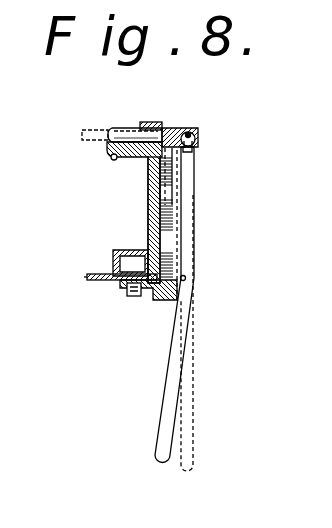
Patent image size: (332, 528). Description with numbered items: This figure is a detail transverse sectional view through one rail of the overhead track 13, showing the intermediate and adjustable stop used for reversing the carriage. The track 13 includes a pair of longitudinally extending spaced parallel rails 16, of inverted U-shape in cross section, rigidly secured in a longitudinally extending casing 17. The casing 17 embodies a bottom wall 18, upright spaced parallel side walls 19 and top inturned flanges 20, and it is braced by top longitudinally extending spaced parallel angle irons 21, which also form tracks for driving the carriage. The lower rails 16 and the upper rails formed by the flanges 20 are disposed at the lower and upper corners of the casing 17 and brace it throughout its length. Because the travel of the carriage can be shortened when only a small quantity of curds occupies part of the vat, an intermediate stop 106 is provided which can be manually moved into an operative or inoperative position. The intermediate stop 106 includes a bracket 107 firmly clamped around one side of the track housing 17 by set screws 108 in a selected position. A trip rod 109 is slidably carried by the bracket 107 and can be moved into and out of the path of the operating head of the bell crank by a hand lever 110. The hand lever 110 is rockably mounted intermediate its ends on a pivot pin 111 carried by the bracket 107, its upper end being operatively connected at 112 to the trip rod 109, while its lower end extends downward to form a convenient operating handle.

The overhead track 13 is at (164, 233).
The rails 16 is at (130, 250).
The casing 17 is at (147, 218).
The bottom wall 18 is at (92, 277).
The side walls 19 is at (146, 195).
The top inturned flanges 20 is at (128, 155).
The angle irons 21 is at (121, 167).
The intermediate stop 106 is at (166, 177).
The bracket 107 is at (157, 124).
The set screws 108 is at (130, 295).
The trip rod 109 is at (177, 129).
The hand lever 110 is at (190, 195).
The pivot pin 111 is at (186, 277).
The operative connection 112 is at (195, 138).